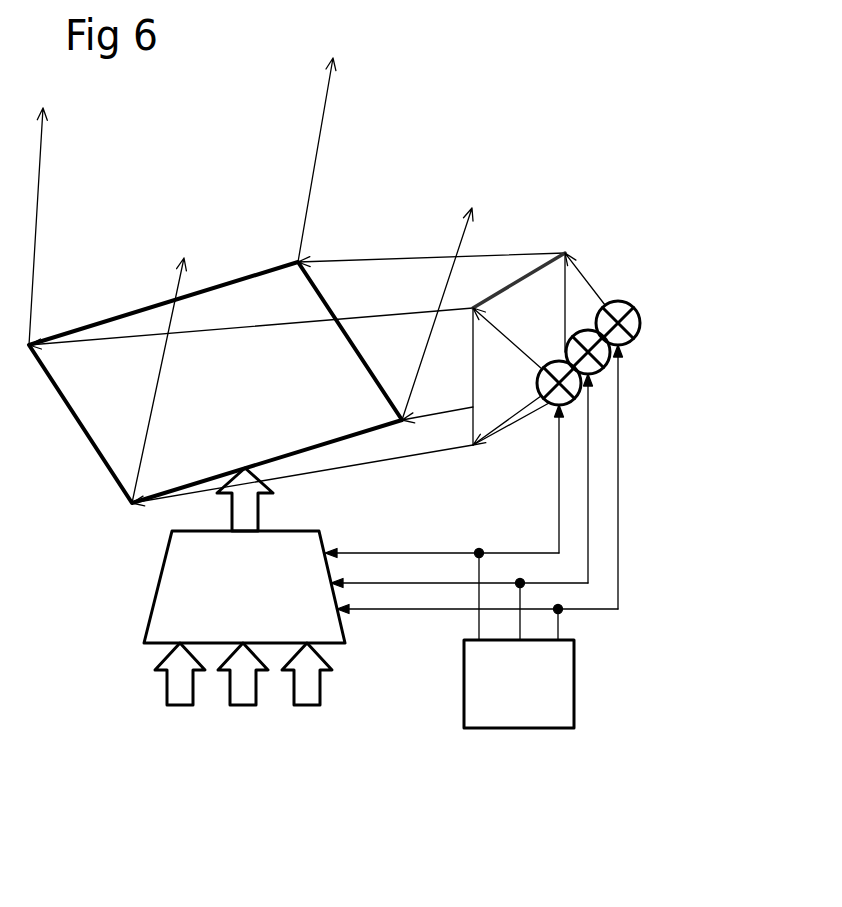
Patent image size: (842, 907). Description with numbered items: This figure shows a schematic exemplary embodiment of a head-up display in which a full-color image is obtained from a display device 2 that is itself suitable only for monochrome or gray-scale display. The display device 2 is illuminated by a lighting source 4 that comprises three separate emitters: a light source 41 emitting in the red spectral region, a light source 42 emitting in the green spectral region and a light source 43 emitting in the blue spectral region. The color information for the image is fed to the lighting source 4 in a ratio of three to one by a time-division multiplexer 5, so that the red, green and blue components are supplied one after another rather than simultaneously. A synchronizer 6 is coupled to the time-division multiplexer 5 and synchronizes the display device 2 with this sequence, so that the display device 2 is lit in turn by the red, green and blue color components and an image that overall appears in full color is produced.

The display device 2 is at (76, 418).
The lighting source 4 is at (614, 307).
The light source 41 is at (641, 326).
The light source 42 is at (572, 336).
The light source 43 is at (537, 378).
The time-division multiplexer 5 is at (170, 608).
The synchronizer 6 is at (525, 729).